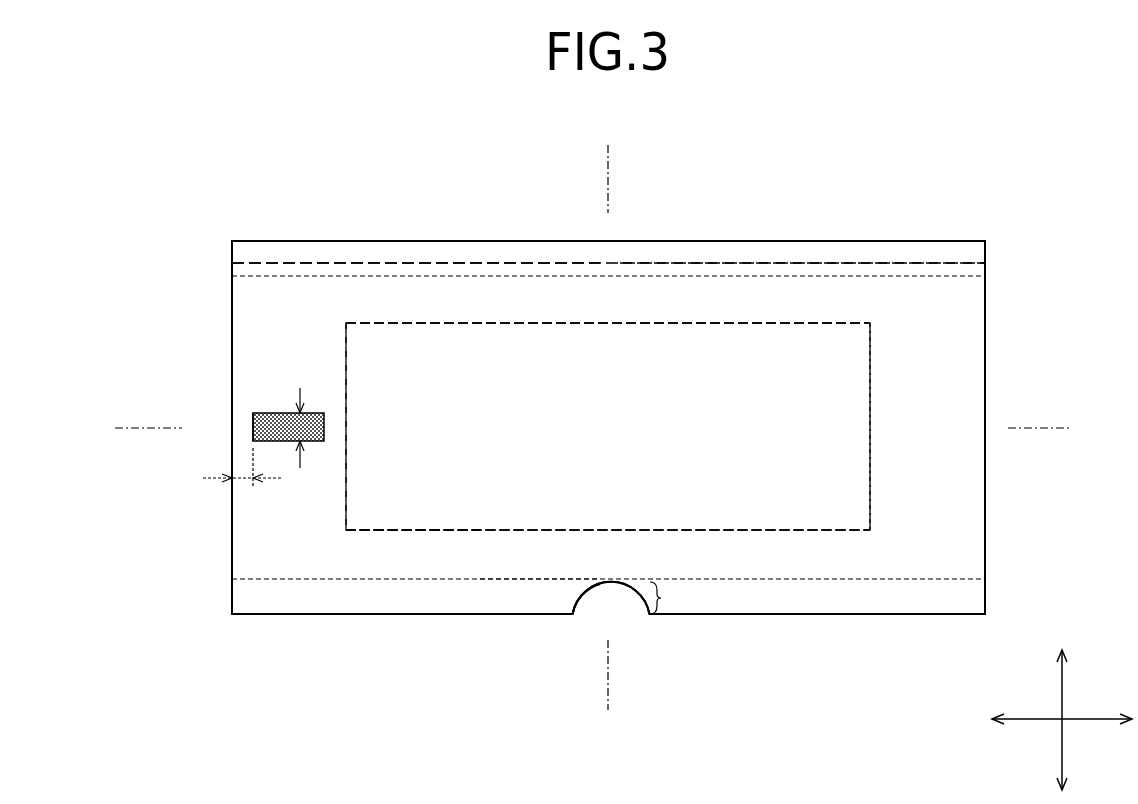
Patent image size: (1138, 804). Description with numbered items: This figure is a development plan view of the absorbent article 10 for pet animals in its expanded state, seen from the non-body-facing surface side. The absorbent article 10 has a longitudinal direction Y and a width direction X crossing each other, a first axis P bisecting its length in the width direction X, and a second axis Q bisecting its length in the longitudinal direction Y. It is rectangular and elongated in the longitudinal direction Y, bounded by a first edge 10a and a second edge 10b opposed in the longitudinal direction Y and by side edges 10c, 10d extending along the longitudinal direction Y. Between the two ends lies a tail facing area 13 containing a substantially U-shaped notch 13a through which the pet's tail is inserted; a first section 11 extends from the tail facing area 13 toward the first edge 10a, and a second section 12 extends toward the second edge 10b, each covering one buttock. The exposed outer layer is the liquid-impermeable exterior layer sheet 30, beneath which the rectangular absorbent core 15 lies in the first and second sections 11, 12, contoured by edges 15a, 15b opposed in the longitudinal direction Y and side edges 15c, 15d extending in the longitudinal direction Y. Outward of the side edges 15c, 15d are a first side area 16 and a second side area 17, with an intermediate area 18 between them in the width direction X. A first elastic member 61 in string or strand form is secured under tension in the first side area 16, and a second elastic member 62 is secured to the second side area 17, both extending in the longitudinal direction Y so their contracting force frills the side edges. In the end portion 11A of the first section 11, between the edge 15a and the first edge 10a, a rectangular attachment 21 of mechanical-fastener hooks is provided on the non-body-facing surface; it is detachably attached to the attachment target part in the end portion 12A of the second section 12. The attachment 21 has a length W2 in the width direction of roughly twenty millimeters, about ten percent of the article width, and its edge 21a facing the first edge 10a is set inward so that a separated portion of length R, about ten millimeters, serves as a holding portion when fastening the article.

The absorbent article 10 is at (974, 200).
The first edge 10a is at (232, 548).
The second edge 10b is at (988, 530).
The side edge 10c is at (510, 241).
The side edge 10d is at (470, 614).
The first section 11 is at (380, 297).
The end portion 11A is at (310, 348).
The second section 12 is at (883, 298).
The end portion 12A is at (955, 367).
The tail facing area 13 is at (632, 598).
The notch 13a is at (588, 590).
The absorbent core 15 is at (792, 357).
The edge 15a is at (346, 500).
The edge 15b is at (871, 448).
The side edge 15c is at (640, 323).
The side edge 15d is at (693, 531).
The first side area 16 is at (447, 293).
The second side area 17 is at (417, 560).
The intermediate area 18 is at (965, 412).
The attachment 21 is at (263, 415).
The edge 21a is at (253, 432).
The liquid-impermeable exterior layer sheet 30 is at (533, 550).
The first elastic member 61 is at (678, 265).
The second elastic member 62 is at (740, 580).
The length of the attachment in the width direction W2 is at (302, 428).
The length of the separated portion R is at (243, 478).
The first axis P is at (120, 428).
The second axis Q is at (608, 152).
The width direction X is at (1064, 690).
The longitudinal direction Y is at (1092, 720).